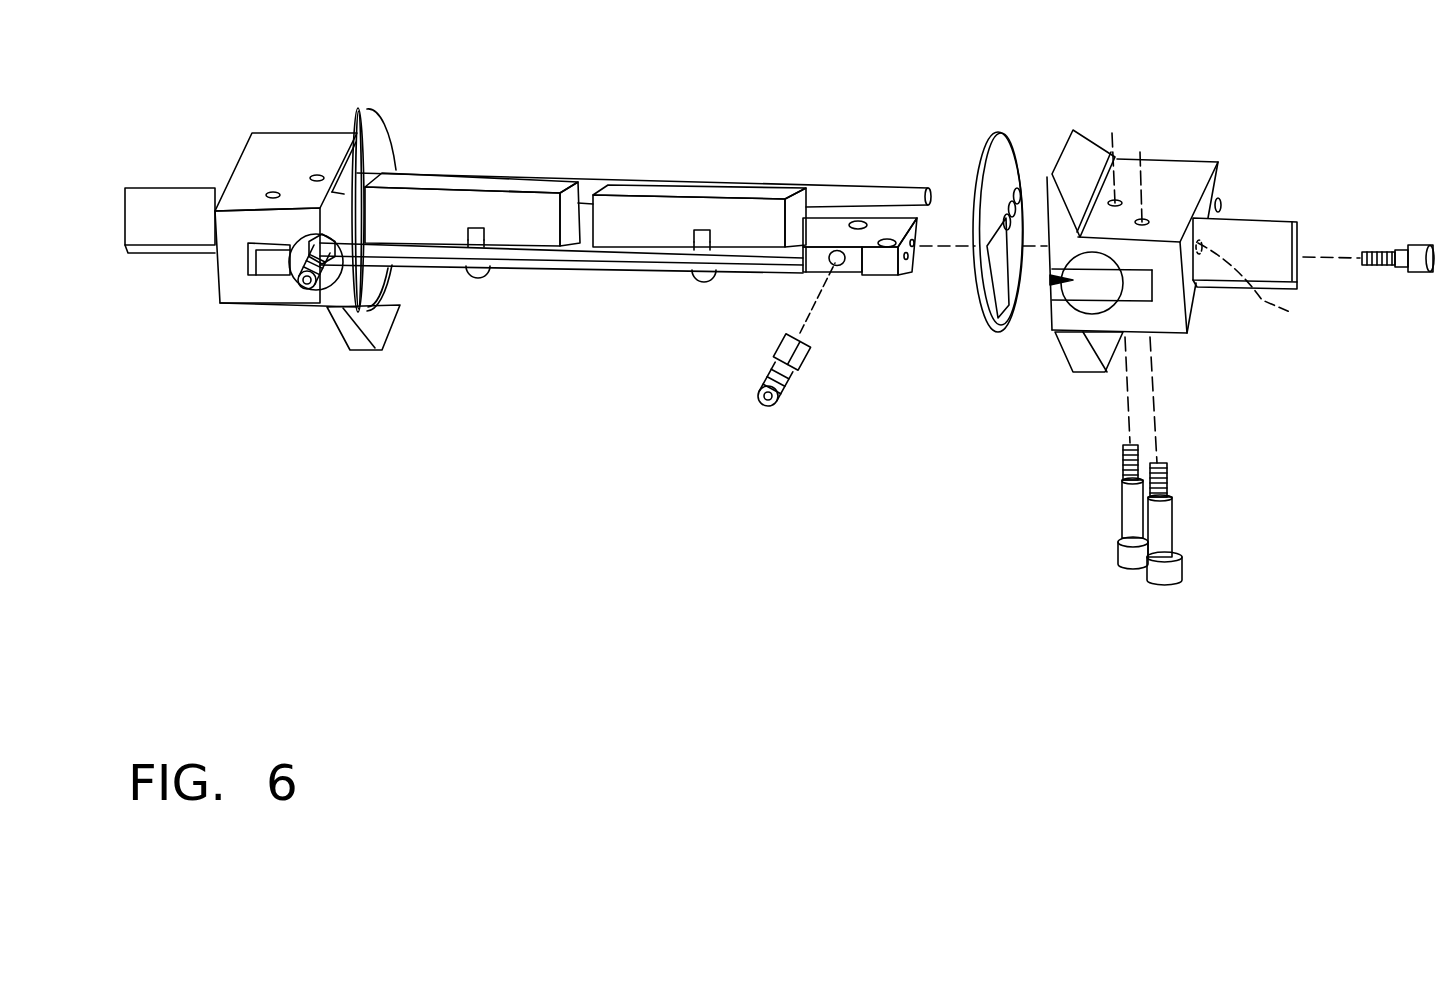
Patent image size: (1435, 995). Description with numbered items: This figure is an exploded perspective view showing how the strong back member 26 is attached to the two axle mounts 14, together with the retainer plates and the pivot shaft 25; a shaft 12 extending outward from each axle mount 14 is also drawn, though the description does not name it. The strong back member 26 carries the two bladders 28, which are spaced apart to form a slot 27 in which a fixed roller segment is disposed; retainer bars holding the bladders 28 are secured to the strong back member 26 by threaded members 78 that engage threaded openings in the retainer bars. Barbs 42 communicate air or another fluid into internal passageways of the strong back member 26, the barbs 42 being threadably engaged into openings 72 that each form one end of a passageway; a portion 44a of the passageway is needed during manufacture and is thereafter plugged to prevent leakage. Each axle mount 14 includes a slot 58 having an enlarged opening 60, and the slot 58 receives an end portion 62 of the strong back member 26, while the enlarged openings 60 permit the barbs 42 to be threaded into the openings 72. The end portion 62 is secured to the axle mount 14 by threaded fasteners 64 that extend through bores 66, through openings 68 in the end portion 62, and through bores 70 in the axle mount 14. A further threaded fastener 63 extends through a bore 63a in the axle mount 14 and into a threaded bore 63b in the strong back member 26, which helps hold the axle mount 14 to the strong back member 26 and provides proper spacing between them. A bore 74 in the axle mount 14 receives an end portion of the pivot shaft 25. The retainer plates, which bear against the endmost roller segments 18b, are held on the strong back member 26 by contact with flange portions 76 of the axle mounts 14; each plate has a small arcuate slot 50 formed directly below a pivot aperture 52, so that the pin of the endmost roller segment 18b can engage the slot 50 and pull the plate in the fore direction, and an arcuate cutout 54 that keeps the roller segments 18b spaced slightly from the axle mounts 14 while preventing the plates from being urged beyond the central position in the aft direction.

The shaft 12 is at (177, 235).
The axle mount 14 is at (238, 146).
The endmost roller segment 18b is at (397, 136).
The pivot shaft 25 is at (827, 187).
The strong back member 26 is at (572, 285).
The slot 27 is at (590, 235).
The bladder 28 is at (626, 187).
The barb 42 is at (318, 285).
The passageway portion 44a is at (915, 245).
The arcuate slot 50 is at (1000, 228).
The pivot aperture 52 is at (1017, 190).
The arcuate cutout 54 is at (393, 307).
The slot 58 is at (272, 275).
The enlarged opening 60 is at (349, 347).
The end portion 62 is at (864, 240).
The threaded fastener 63 is at (1418, 247).
The bore 63a is at (1268, 280).
The threaded bore 63b is at (912, 258).
The threaded fastener 64 is at (1160, 582).
The bore 66 is at (1110, 268).
The opening 68 is at (890, 239).
The bore 70 is at (320, 175).
The opening 72 is at (831, 265).
The bore 74 is at (1222, 205).
The flange portion 76 is at (348, 163).
The threaded member 78 is at (477, 280).